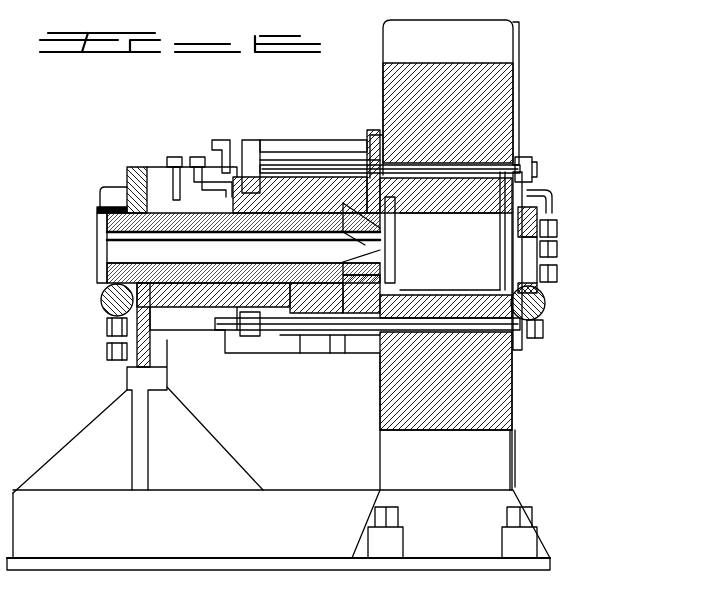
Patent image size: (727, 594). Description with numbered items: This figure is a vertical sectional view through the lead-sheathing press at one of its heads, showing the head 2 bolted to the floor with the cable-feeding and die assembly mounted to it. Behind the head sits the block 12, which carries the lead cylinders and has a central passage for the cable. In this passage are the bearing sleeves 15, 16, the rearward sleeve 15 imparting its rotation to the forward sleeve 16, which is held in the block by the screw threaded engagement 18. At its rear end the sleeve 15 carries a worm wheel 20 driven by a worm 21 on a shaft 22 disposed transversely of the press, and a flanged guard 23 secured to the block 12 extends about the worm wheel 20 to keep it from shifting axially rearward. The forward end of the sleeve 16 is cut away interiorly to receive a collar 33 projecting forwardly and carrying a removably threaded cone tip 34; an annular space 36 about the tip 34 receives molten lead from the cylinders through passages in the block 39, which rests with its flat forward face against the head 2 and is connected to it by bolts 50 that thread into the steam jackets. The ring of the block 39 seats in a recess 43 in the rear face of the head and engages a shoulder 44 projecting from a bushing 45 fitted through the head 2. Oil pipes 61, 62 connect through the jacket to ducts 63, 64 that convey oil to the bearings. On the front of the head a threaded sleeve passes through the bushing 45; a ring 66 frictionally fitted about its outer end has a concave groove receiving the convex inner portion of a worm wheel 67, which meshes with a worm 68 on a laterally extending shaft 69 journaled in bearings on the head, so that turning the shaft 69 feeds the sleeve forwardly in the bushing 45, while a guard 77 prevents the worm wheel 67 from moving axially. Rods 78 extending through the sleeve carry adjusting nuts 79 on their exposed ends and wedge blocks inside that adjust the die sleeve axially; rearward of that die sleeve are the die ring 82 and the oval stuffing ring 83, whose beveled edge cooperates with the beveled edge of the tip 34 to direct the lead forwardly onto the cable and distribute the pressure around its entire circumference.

The head 2 is at (518, 43).
The block 12 is at (197, 297).
The bearing sleeve 15 is at (120, 250).
The bearing sleeve 16 is at (240, 300).
The screw threaded engagement 18 is at (262, 258).
The worm wheel 20 is at (103, 283).
The worm 21 is at (107, 325).
The shaft 22 is at (100, 307).
The flanged guard 23 is at (97, 203).
The collar 33 is at (305, 285).
The cone tip 34 is at (330, 297).
The annular space 36 is at (337, 303).
The block 39 is at (315, 163).
The recess 43 is at (440, 297).
The shoulder 44 is at (393, 237).
The bushing 45 is at (532, 177).
The bolts 50 is at (518, 160).
The oil pipe 61 is at (173, 160).
The oil pipe 62 is at (197, 157).
The duct 63 is at (133, 187).
The duct 64 is at (262, 167).
The ring 66 is at (557, 225).
The worm wheel 67 is at (555, 205).
The worm 68 is at (547, 317).
The shaft 69 is at (545, 305).
The guard 77 is at (540, 187).
The rods 78 is at (558, 248).
The adjusting nuts 79 is at (550, 268).
The die ring 82 is at (375, 260).
The stuffing ring 83 is at (380, 270).